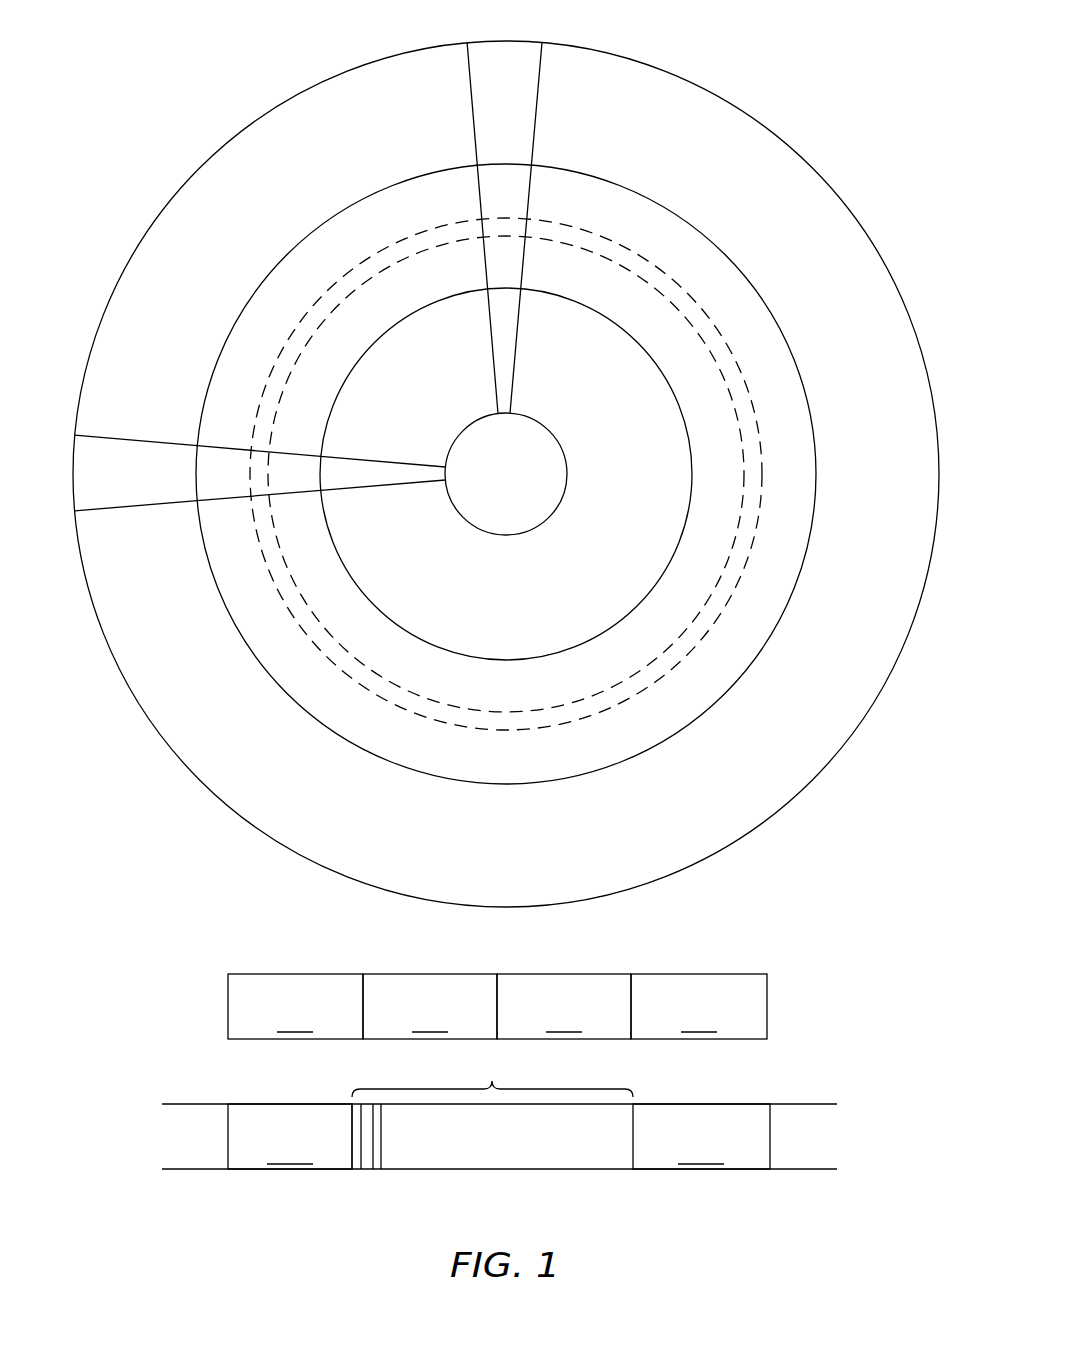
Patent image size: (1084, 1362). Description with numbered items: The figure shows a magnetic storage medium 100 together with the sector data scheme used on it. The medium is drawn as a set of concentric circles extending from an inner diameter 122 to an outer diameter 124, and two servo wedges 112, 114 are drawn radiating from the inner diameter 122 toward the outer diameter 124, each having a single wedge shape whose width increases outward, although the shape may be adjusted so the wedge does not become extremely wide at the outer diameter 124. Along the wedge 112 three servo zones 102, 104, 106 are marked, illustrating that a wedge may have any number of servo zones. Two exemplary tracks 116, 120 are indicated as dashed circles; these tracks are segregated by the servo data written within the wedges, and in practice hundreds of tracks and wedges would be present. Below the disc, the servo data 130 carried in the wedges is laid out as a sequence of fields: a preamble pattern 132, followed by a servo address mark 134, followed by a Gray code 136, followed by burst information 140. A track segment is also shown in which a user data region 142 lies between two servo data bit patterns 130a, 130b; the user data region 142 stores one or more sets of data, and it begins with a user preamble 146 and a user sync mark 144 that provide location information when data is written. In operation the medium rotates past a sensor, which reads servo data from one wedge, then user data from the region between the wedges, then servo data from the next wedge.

The magnetic storage medium 100 is at (484, 455).
The servo zone 102 is at (152, 485).
The servo zone 104 is at (237, 485).
The servo zone 106 is at (359, 483).
The servo wedge 112 is at (237, 460).
The servo wedge 114 is at (485, 41).
The track 116 is at (614, 220).
The track 120 is at (629, 270).
The inner diameter 122 is at (566, 474).
The outer diameter 124 is at (787, 148).
The servo data 130 is at (497, 1062).
The servo data bit pattern 130a is at (290, 1136).
The servo data bit pattern 130b is at (701, 1136).
The preamble pattern 132 is at (295, 1006).
The servo address mark 134 is at (430, 1006).
The Gray code 136 is at (564, 1006).
The burst information 140 is at (699, 1006).
The user data region 142 is at (492, 1076).
The user sync mark 144 is at (378, 1172).
The user preamble 146 is at (367, 1172).